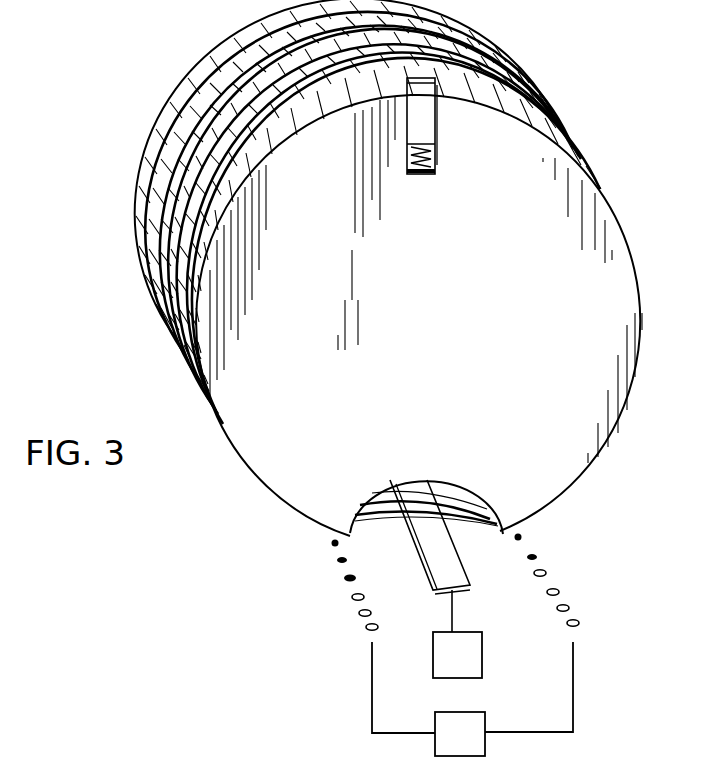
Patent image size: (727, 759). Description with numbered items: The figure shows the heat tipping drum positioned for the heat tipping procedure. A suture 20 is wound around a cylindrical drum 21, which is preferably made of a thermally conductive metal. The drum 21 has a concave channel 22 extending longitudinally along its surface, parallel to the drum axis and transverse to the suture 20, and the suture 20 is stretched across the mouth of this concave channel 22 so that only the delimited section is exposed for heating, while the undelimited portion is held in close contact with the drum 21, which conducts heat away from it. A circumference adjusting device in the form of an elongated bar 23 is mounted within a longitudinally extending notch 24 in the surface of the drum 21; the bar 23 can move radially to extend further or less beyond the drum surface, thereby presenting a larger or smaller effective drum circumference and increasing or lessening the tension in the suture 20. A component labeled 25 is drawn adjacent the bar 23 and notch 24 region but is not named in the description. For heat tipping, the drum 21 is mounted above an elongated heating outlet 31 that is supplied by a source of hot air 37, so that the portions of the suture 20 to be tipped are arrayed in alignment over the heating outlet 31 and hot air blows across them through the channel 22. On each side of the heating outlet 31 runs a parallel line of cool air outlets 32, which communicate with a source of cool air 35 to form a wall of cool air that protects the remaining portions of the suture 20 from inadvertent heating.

The suture 20 is at (472, 518).
The cylindrical drum 21 is at (453, 333).
The concave channel 22 is at (372, 492).
The bar 23 is at (417, 113).
The notch 24 is at (437, 165).
The spring 25 is at (413, 176).
The heating outlet 31 is at (450, 597).
The cool air outlets 32 is at (341, 645).
The source of cool air 35 is at (472, 699).
The source of hot air 37 is at (457, 655).